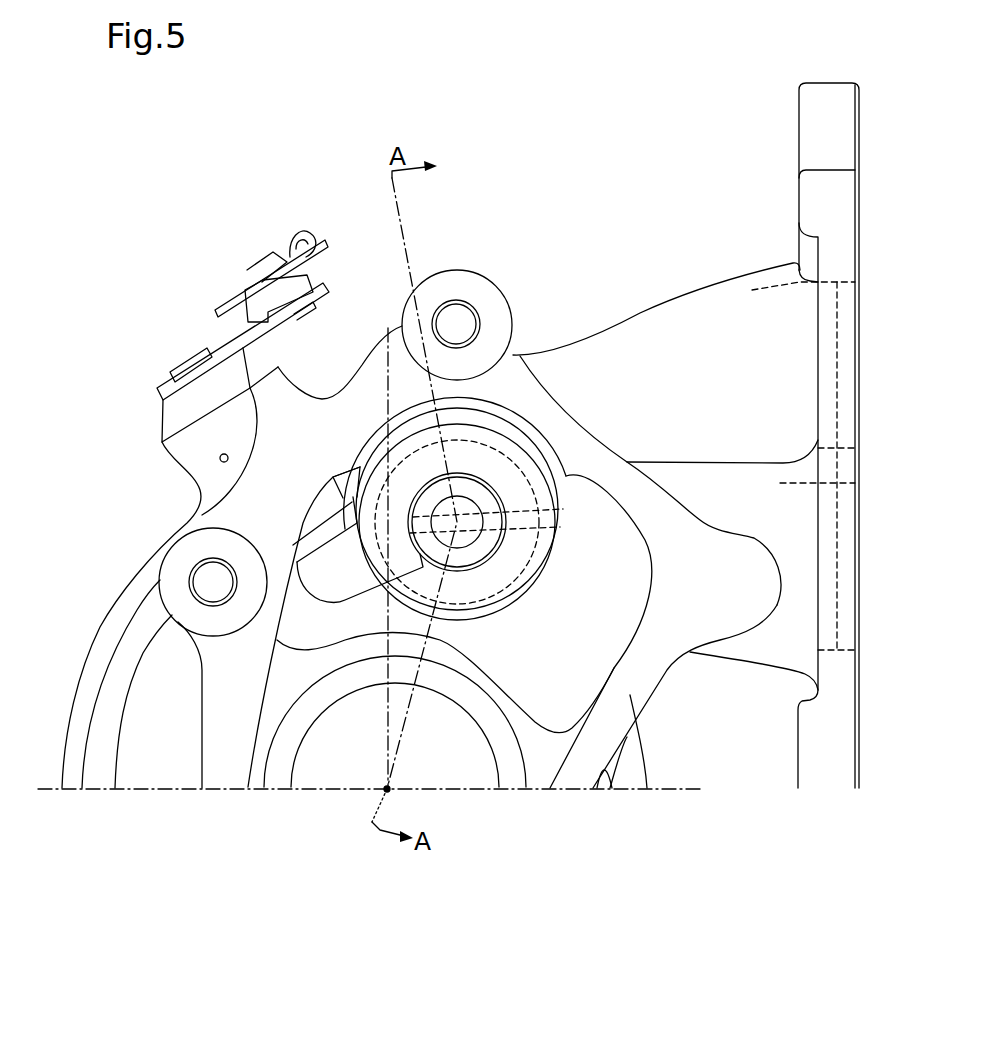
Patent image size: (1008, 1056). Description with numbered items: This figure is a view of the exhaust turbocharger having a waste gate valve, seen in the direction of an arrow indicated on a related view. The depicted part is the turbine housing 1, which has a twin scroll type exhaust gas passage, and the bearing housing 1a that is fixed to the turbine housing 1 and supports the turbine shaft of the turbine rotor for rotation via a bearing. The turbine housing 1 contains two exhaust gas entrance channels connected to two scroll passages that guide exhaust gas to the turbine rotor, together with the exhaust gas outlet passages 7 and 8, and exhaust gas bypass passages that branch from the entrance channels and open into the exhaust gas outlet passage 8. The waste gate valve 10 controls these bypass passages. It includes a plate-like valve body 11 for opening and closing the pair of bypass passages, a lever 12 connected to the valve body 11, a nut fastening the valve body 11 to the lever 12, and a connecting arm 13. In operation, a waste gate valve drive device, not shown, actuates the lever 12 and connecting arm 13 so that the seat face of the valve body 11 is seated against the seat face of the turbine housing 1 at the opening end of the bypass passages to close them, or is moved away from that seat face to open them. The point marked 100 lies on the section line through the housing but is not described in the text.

The turbine housing 1 is at (668, 298).
The bearing housing 1a is at (478, 293).
The exhaust gas outlet passage 7 is at (437, 776).
The exhaust gas outlet passage 8 is at (557, 700).
The waste gate valve 10 is at (547, 603).
The valve body 11 is at (510, 447).
The lever 12 is at (330, 580).
The connecting arm 13 is at (250, 334).
The crankshaft axis point 100 is at (387, 790).